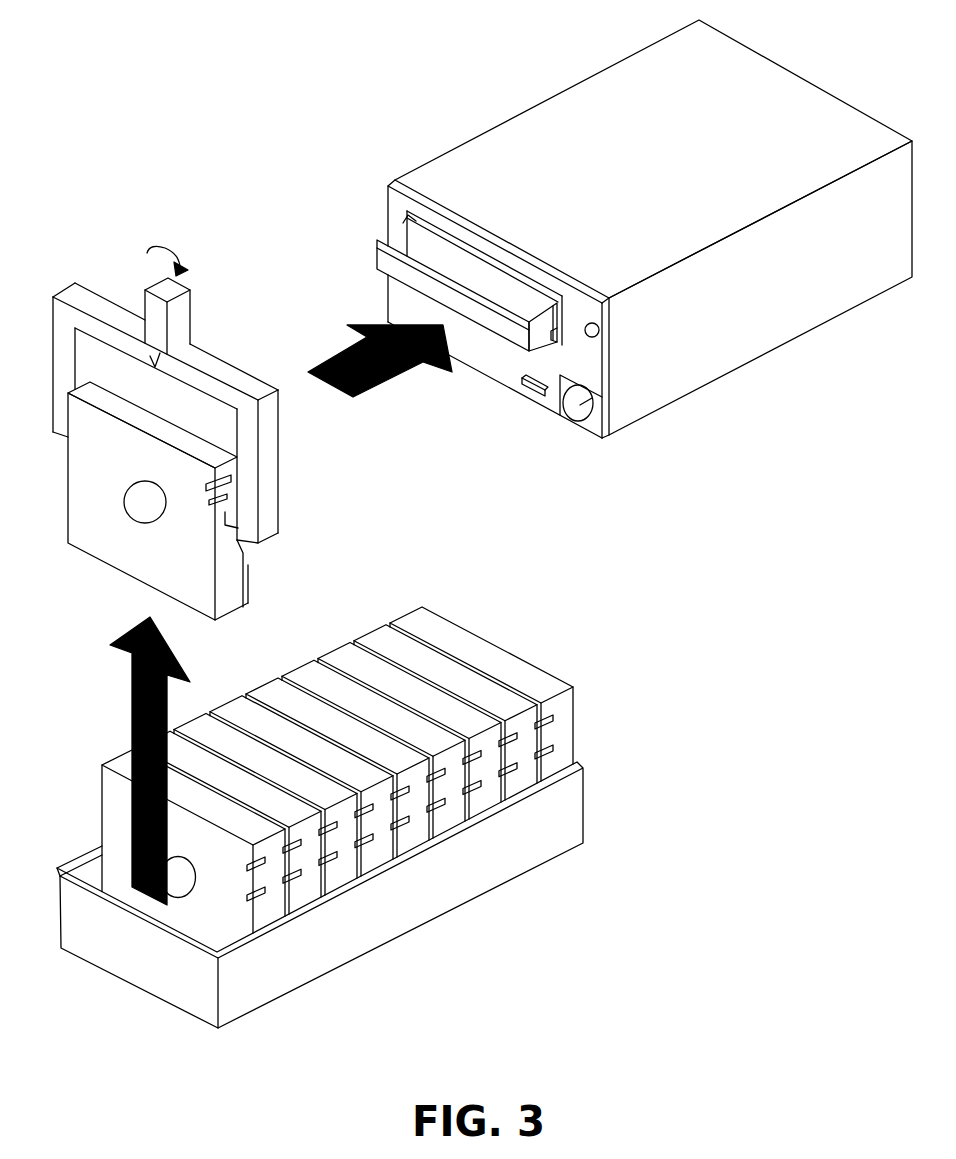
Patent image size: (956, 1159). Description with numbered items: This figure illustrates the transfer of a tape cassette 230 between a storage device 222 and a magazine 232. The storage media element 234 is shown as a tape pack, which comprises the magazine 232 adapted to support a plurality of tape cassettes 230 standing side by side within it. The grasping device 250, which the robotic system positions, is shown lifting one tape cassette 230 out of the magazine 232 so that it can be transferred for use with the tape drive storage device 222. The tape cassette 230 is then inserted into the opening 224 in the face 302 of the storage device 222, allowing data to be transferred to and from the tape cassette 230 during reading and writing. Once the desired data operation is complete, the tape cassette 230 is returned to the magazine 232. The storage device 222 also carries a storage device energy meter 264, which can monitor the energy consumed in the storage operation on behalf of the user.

The storage device 222 is at (581, 53).
The opening 224 is at (410, 190).
The tape cassette 230 is at (378, 245).
The magazine 232 is at (437, 928).
The storage media element 234 is at (556, 634).
The grasping device 250 is at (208, 352).
The storage device energy meter 264 is at (580, 425).
The face 302 is at (546, 258).